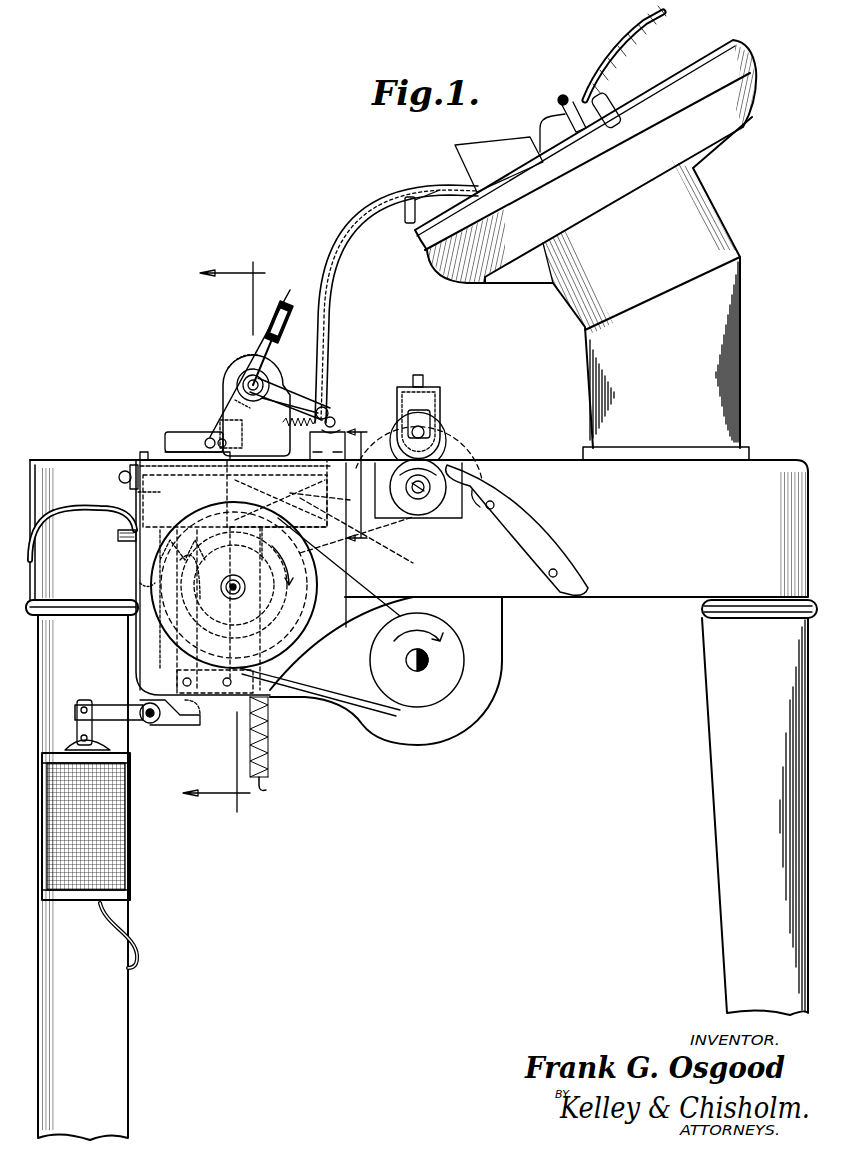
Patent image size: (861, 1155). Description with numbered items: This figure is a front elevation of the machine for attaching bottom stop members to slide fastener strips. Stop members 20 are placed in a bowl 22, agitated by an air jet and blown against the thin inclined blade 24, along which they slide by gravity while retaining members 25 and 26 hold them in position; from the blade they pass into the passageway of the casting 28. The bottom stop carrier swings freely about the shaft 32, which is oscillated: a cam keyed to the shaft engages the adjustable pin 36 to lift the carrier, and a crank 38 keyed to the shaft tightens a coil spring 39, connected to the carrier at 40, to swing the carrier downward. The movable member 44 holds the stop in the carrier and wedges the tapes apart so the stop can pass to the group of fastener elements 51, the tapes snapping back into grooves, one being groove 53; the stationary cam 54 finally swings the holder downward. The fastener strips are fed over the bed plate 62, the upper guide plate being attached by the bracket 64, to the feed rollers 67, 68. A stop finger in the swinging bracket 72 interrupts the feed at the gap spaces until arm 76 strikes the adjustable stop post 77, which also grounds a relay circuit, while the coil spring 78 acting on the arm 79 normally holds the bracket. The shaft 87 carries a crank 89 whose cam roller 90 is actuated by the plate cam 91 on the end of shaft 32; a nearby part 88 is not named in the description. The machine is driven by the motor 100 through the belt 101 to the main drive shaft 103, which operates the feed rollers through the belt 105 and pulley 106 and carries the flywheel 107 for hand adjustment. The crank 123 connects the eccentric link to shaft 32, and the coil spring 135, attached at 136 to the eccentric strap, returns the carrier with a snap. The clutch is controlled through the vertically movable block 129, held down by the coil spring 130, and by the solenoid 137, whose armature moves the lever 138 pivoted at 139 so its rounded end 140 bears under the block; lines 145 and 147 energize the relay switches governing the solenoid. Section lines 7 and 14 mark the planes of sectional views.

The section line 7- 7 is at (224, 537).
The carrier belt 14 is at (358, 487).
The stop member 20 is at (417, 225).
The bowl 22 is at (483, 286).
The blade 24 is at (427, 206).
The retaining member 25 is at (583, 95).
The retaining member 26 is at (382, 205).
The casting 28 is at (322, 468).
The shaft 32 is at (243, 380).
The adjustable pin 36 is at (290, 390).
The crank 38 is at (232, 420).
The coil spring 39 is at (328, 408).
The spring connection point 40 is at (318, 416).
The movable member 44 is at (262, 520).
The fastener elements 51 is at (337, 421).
The groove 53 is at (270, 335).
The stationary cam 54 is at (252, 347).
The bed plate 62 is at (160, 470).
The bracket 64 is at (141, 455).
The feed roller 67 is at (440, 428).
The feed roller 68 is at (432, 502).
The swinging bracket 72 is at (235, 575).
The arm 76 is at (233, 580).
The stop pin 77 is at (122, 542).
The coil spring 78 is at (120, 478).
The arm 79 is at (140, 500).
The shaft 87 is at (213, 433).
The rollers 88 is at (200, 436).
The crank 89 is at (305, 400).
The cam roller 90 is at (172, 452).
The plate cam 91 is at (235, 400).
The motor 100 is at (424, 745).
The belt 101 is at (333, 683).
The main drive shaft 103 is at (231, 598).
The belt 105 is at (410, 565).
The pulley 106 is at (465, 455).
The flywheel 107 is at (160, 612).
The crank 123 is at (236, 365).
The vertically movable block 129 is at (210, 695).
The coil spring 130 is at (150, 584).
The coil spring 135 is at (270, 748).
The spring attachment point 136 is at (318, 652).
The clutch operating solenoid 137 is at (130, 856).
The lever 138 is at (103, 708).
The pivot 139 is at (152, 724).
The rounded end 140 is at (196, 718).
The line 145 is at (88, 515).
The line 147 is at (326, 442).